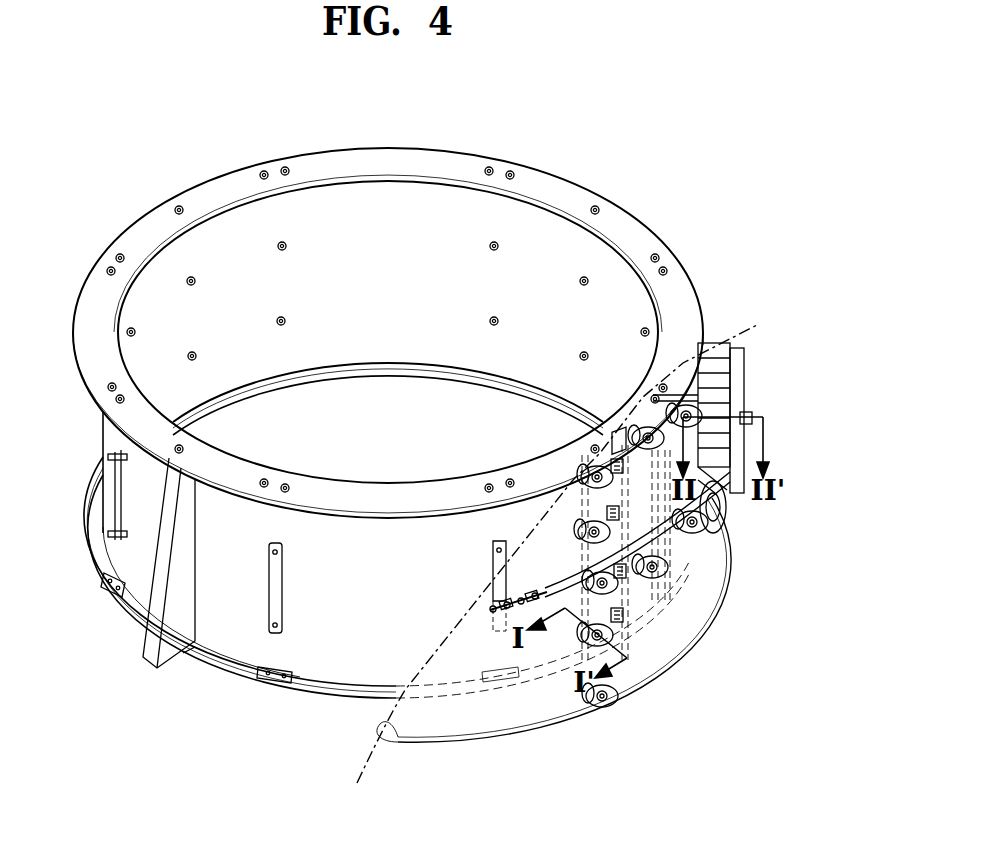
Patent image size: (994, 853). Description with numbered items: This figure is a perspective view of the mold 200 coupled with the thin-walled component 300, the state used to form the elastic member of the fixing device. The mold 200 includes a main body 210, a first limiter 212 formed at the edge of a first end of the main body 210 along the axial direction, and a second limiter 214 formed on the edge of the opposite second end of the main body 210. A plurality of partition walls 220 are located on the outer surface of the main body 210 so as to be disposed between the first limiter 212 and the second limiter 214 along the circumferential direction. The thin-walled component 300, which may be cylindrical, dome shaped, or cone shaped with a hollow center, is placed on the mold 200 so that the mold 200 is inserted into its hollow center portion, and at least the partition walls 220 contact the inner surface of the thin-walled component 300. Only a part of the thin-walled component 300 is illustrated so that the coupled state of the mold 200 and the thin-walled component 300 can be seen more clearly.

The mold 200 is at (660, 205).
The main body 210 is at (228, 620).
The first limiter 212 is at (318, 690).
The second limiter 214 is at (680, 297).
The partition walls 220 is at (172, 611).
The thin-walled component 300 is at (633, 505).